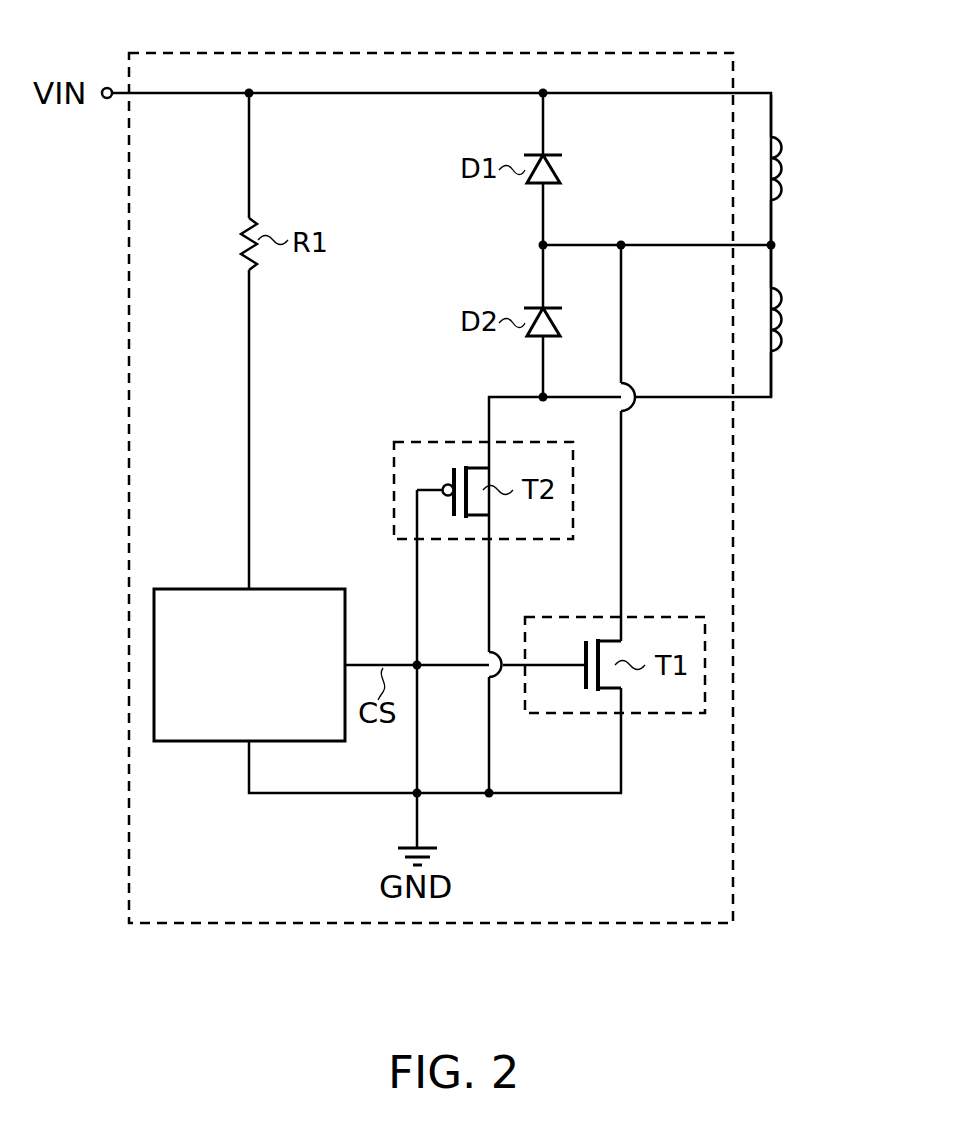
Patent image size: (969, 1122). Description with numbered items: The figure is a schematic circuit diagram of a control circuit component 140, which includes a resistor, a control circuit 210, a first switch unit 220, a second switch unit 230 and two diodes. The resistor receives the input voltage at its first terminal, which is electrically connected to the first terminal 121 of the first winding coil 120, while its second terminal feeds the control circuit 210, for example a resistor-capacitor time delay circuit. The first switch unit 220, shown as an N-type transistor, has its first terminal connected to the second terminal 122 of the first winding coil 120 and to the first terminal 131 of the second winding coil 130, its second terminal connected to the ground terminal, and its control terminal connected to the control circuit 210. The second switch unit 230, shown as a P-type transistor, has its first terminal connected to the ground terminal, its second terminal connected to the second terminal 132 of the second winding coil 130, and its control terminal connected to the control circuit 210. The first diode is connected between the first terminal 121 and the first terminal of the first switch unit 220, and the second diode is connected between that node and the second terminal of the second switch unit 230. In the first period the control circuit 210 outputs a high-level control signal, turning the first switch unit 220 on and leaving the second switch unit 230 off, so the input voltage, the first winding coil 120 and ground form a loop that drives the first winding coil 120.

The control circuit component 140 is at (130, 53).
The first winding coil 120 is at (782, 177).
The first terminal of the first winding coil 121 is at (774, 125).
The second terminal of the first winding coil 122 is at (774, 214).
The second winding coil 130 is at (782, 328).
The first terminal of the second winding coil 131 is at (774, 278).
The second terminal of the second winding coil 132 is at (774, 365).
The control circuit 210 is at (155, 589).
The first switch unit 220 is at (527, 617).
The second switch unit 230 is at (396, 442).